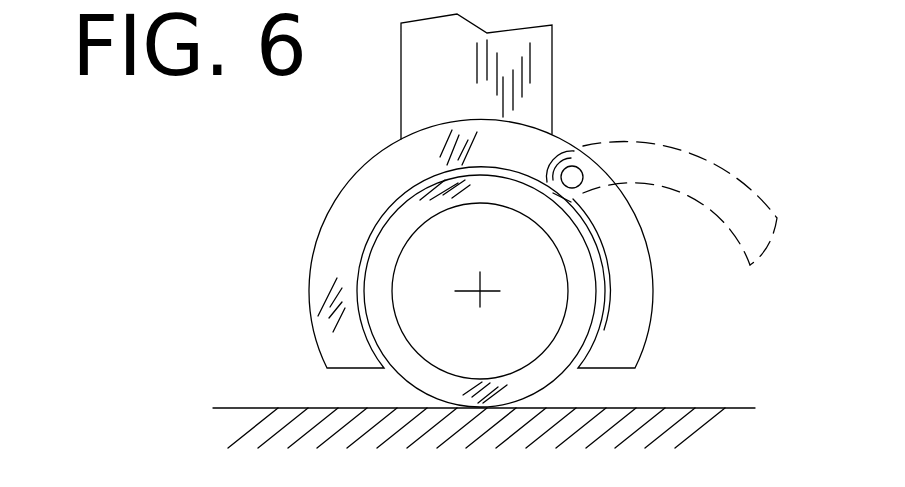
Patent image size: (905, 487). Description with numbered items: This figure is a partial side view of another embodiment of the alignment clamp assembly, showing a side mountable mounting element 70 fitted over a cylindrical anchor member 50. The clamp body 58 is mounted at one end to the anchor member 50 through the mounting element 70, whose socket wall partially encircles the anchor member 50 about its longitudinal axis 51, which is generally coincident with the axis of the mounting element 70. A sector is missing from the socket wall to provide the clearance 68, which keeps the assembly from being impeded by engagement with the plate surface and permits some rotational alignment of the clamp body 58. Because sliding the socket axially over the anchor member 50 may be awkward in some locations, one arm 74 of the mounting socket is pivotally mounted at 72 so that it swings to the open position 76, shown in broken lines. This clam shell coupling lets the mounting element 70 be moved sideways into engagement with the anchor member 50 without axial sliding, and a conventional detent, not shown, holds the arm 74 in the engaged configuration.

The anchor member 50 is at (375, 277).
The longitudinal axis 51 is at (480, 291).
The clamp body 58 is at (432, 75).
The clearance 68 is at (355, 387).
The mounting element 70 is at (367, 197).
The pivot 72 is at (575, 173).
The arm 74 is at (620, 327).
The open position 76 is at (663, 167).